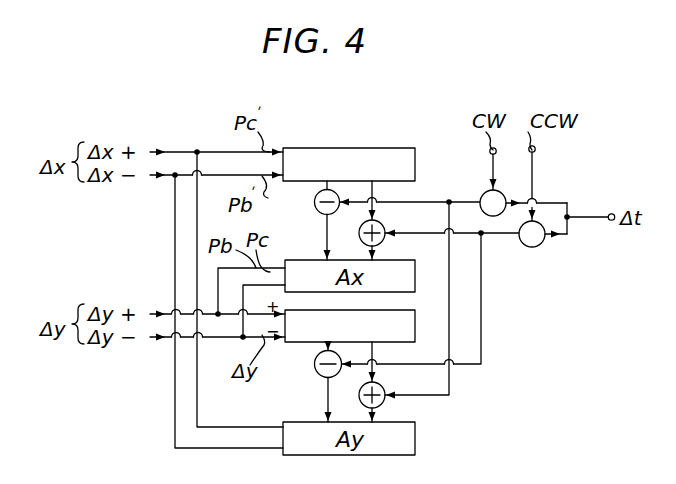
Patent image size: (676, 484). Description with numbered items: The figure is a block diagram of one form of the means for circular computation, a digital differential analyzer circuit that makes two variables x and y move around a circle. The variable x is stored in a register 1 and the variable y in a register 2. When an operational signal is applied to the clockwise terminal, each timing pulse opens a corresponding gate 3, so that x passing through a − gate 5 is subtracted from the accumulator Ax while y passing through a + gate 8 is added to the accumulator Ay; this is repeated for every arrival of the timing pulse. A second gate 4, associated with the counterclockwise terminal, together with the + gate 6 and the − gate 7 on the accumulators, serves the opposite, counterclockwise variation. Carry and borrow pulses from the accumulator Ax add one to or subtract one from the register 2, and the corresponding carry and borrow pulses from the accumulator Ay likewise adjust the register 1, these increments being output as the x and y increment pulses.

The register 1 is at (395, 148).
The register 2 is at (415, 325).
The gate 3 is at (482, 190).
The gate 4 is at (534, 248).
The − gate 5 is at (315, 206).
The + gate 6 is at (384, 243).
The − gate 7 is at (314, 367).
The + gate 8 is at (384, 390).